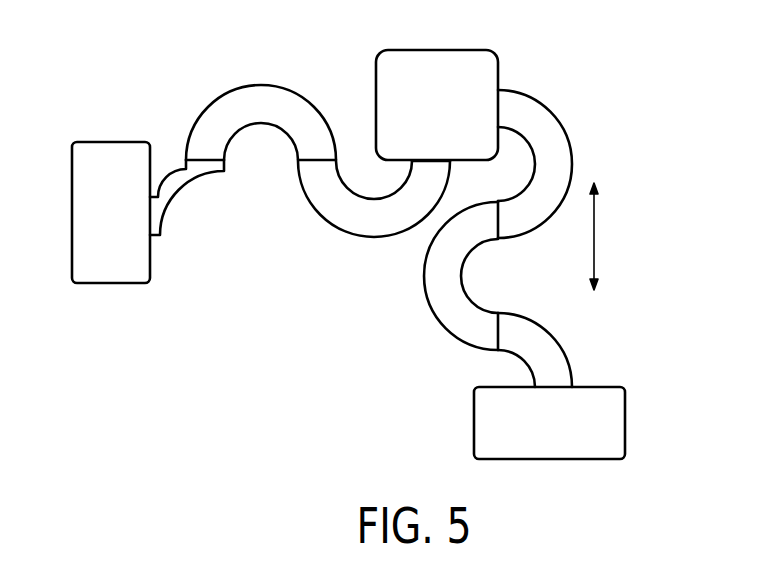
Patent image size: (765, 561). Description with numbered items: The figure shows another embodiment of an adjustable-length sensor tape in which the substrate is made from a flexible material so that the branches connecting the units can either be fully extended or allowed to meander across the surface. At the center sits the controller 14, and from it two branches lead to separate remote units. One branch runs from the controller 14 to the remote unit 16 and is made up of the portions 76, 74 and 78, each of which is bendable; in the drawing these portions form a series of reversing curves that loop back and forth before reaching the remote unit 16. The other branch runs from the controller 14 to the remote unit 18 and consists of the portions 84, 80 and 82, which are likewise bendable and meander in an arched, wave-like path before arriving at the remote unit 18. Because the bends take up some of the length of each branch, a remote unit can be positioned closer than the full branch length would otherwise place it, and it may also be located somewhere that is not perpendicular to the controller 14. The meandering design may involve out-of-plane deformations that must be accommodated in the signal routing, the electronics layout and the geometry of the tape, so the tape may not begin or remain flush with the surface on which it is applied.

The controller 14 is at (450, 120).
The remote unit 16 is at (561, 438).
The remote unit 18 is at (123, 227).
The portion of the branch 74 is at (435, 300).
The portion of the branch 76 is at (560, 165).
The portion of the branch 78 is at (545, 348).
The portion of the branch 80 is at (293, 108).
The portion of the branch 82 is at (185, 212).
The portion of the branch 84 is at (348, 218).